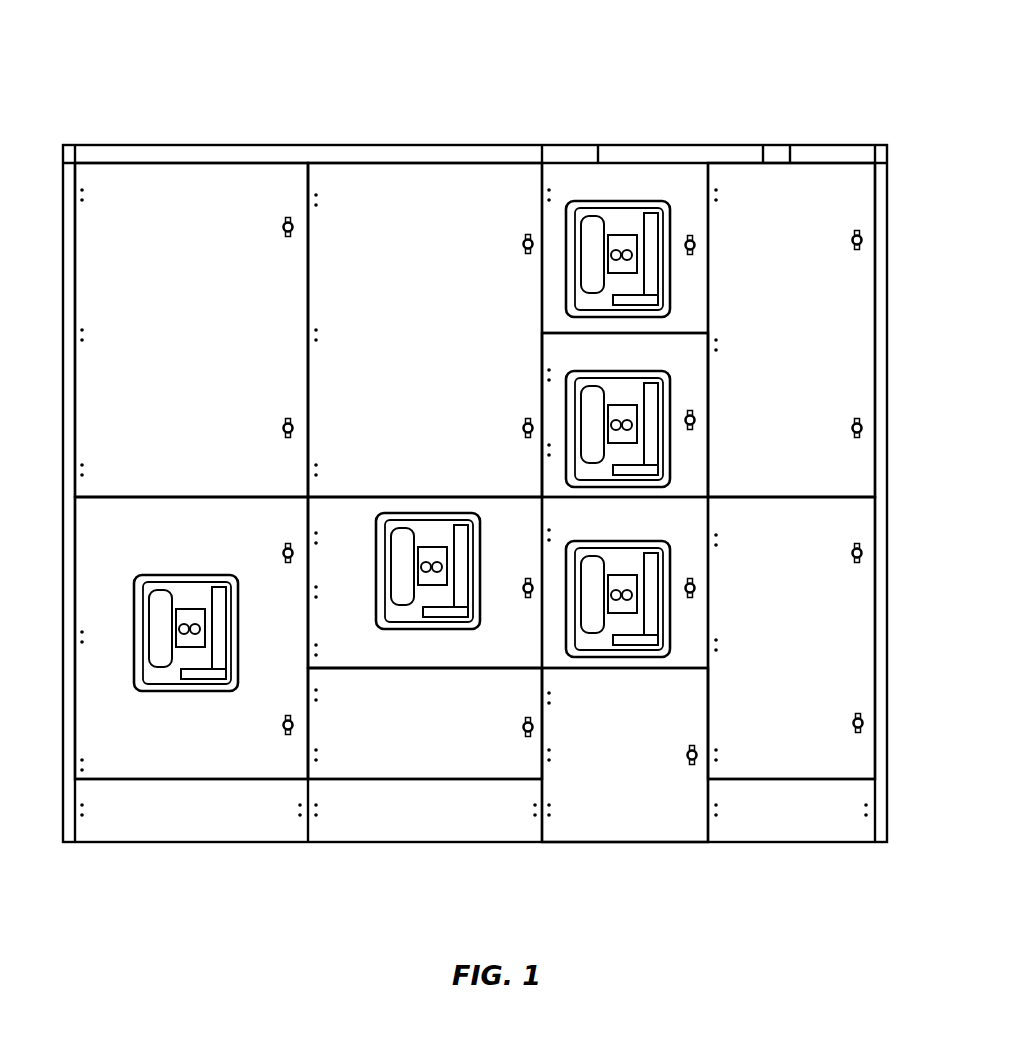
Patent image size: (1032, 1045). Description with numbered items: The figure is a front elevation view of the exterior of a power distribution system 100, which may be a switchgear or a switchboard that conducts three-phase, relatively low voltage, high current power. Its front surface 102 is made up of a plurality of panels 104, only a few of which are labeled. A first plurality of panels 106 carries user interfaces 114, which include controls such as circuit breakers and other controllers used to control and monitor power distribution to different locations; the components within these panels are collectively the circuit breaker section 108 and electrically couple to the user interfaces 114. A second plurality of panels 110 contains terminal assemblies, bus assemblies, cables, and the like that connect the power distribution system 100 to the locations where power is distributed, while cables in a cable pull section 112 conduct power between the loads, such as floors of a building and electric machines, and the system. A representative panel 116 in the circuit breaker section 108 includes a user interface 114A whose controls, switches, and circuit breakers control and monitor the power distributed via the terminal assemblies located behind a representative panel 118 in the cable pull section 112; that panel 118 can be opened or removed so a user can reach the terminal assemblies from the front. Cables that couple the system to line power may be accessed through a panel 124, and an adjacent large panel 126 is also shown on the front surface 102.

The power distribution system 100 is at (725, 72).
The front surface 102 is at (170, 207).
The panels 104 is at (681, 190).
The first plurality of panels 106 is at (598, 152).
The circuit breaker section 108 is at (576, 150).
The second plurality of panels 110 is at (791, 151).
The cable pull section 112 is at (764, 151).
The user interfaces 114 is at (617, 197).
The user interface 114A is at (670, 463).
The panel 116 is at (692, 368).
The panel 118 is at (814, 173).
The panel 124 is at (214, 349).
The large compartment 126 is at (450, 349).